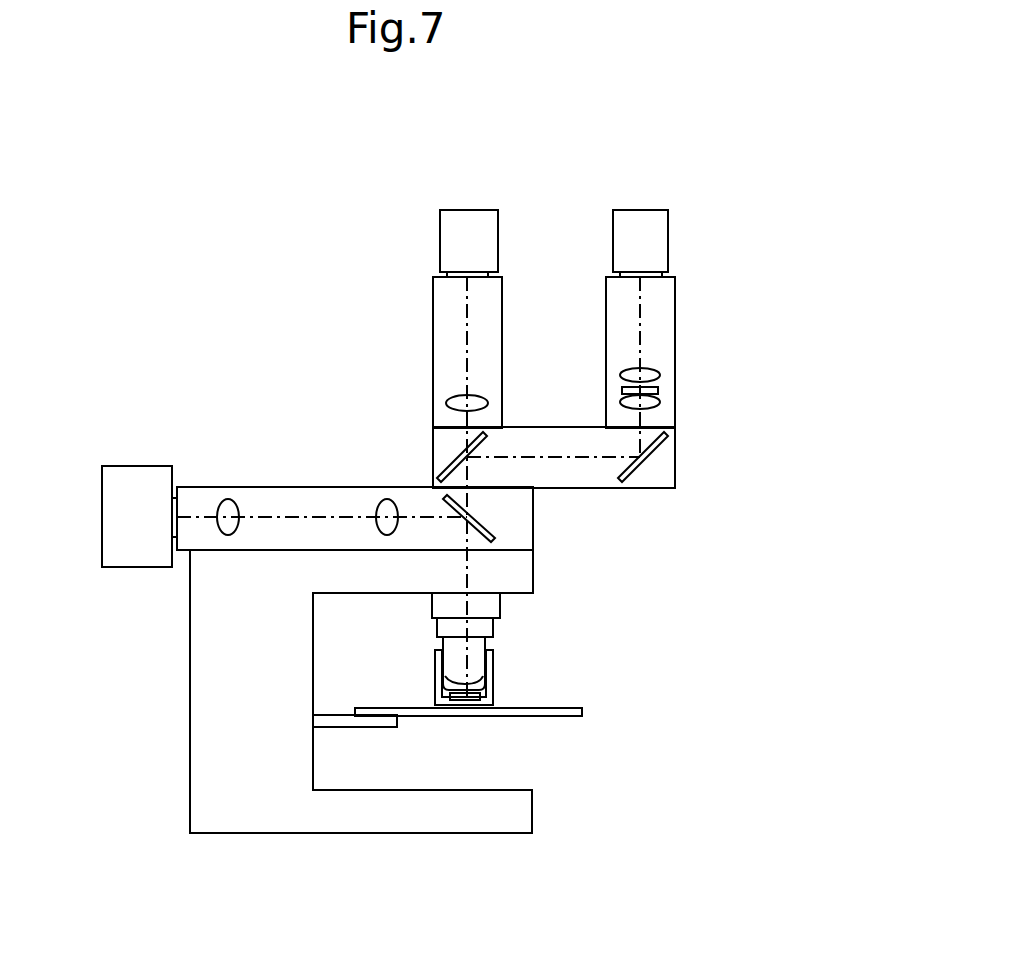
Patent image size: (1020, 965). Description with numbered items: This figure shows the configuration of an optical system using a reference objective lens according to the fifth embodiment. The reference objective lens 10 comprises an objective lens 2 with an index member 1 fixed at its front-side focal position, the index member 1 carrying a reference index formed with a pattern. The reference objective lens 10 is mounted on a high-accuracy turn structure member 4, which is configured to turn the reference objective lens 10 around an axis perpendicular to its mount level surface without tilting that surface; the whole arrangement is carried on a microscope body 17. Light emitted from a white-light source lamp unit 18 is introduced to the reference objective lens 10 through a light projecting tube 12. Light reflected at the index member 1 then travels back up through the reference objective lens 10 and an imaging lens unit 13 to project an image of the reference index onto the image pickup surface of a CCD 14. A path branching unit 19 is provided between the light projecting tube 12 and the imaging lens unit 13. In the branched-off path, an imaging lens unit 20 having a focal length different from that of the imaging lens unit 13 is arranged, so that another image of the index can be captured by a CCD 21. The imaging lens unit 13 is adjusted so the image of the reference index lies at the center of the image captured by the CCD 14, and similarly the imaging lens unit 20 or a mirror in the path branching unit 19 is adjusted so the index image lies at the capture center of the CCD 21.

The index member 1 is at (480, 697).
The objective lens 2 is at (480, 668).
The high-accuracy turn structure member 4 is at (530, 593).
The reference objective lens 10 is at (420, 681).
The light projecting tube 12 is at (523, 518).
The imaging lens unit 13 is at (490, 372).
The CCD 14 is at (465, 255).
The microscope body 17 is at (218, 700).
The white-light source lamp unit 18 is at (122, 522).
The path branching unit 19 is at (670, 458).
The imaging lens unit 20 is at (670, 375).
The CCD 21 is at (642, 240).